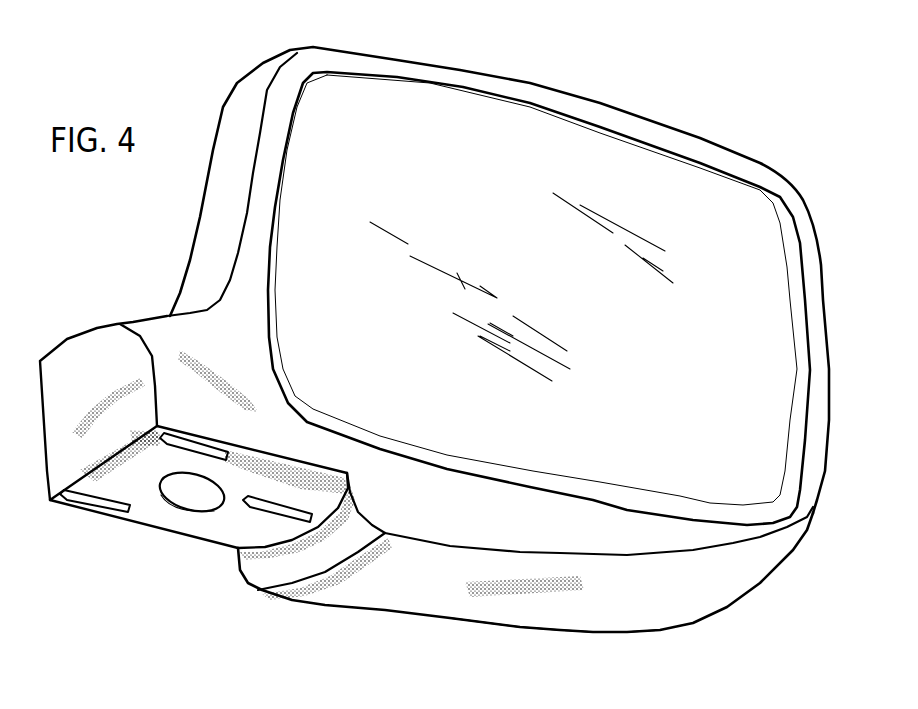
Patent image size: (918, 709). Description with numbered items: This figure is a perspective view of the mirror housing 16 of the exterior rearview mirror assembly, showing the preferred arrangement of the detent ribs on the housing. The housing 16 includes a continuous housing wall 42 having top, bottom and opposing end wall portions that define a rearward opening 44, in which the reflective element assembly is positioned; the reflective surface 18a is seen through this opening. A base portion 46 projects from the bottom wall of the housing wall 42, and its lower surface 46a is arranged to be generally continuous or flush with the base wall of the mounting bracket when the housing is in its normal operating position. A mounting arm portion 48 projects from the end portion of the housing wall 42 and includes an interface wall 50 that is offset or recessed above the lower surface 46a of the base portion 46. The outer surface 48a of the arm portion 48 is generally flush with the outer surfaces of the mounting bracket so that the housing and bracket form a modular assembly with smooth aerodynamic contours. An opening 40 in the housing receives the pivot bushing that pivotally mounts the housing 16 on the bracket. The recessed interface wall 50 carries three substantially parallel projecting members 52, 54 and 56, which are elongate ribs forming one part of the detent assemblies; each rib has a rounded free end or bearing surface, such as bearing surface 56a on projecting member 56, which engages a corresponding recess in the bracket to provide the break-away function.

The housing 16 is at (629, 80).
The reflective element (mirror glass) 18a is at (393, 108).
The opening 40 is at (183, 492).
The housing wall 42 is at (738, 170).
The rearward opening 44 is at (506, 102).
The base portion 46 is at (690, 587).
The lower surface 46a is at (592, 622).
The mounting arm portion 48 is at (100, 293).
The outer surface 48a is at (243, 329).
The interface wall 50 is at (203, 533).
The projecting member 52 is at (83, 512).
The projecting member 54 is at (210, 446).
The projecting member 56 is at (253, 507).
The bearing surface 56a is at (287, 522).